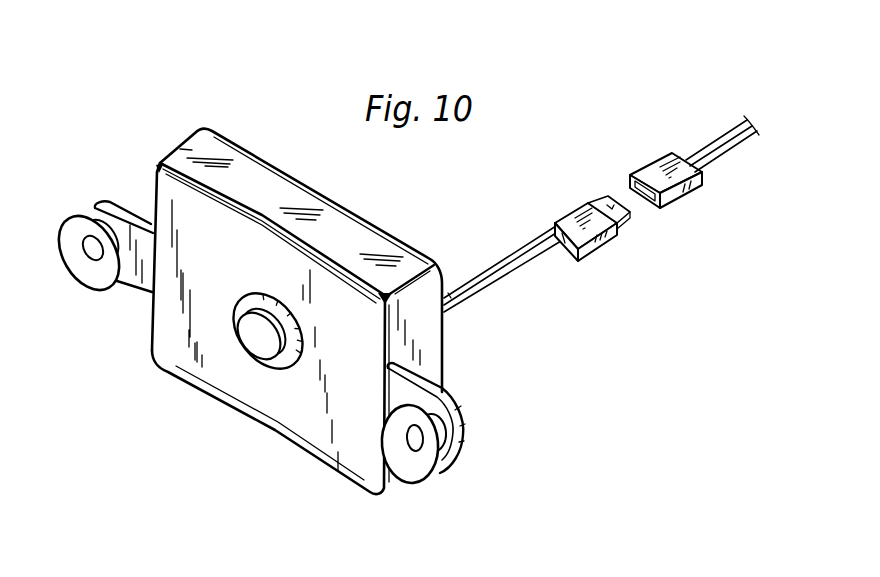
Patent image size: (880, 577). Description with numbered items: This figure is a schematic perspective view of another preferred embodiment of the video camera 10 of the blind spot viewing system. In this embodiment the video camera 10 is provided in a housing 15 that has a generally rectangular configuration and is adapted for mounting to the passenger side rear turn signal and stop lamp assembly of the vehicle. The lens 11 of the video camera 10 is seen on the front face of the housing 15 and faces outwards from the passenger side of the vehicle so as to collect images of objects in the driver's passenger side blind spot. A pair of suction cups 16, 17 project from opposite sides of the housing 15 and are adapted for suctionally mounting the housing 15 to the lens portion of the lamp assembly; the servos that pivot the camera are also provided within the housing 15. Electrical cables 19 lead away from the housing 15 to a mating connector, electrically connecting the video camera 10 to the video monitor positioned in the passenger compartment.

The video camera 10 is at (173, 108).
The lens 11 is at (255, 337).
The housing 15 is at (232, 173).
The suction cup 16 is at (100, 273).
The suction cup 17 is at (419, 470).
The electrical cables 19 is at (521, 260).